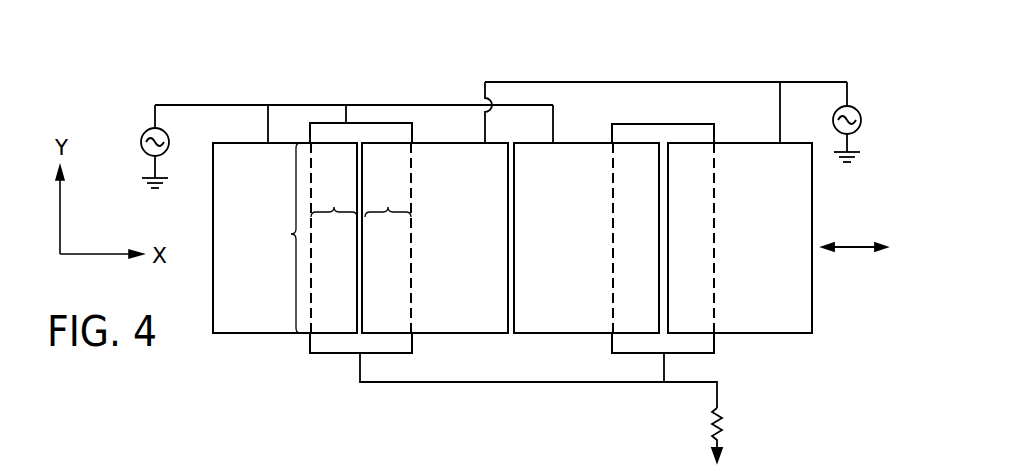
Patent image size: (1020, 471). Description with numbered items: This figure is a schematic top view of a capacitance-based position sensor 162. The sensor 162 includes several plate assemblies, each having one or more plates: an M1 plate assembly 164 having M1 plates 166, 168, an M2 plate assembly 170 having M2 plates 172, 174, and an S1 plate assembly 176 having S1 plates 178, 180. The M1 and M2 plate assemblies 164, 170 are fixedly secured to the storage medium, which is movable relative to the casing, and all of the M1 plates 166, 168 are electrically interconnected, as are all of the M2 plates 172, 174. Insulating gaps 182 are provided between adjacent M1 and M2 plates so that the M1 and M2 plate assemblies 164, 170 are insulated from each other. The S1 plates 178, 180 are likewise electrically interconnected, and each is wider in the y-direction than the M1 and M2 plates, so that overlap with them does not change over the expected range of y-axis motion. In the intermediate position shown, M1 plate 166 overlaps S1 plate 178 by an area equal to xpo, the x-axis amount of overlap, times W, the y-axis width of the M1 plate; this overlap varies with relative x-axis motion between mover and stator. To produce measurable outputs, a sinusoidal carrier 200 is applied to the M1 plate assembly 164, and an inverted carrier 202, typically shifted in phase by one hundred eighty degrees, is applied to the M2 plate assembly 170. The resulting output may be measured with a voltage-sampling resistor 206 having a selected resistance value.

The position sensor 162 is at (725, 49).
The M1 plate assembly 164 is at (212, 233).
The M1 plate 166 is at (235, 336).
The M1 plate 168 is at (575, 337).
The M2 plate assembly 170 is at (414, 238).
The M2 plate 172 is at (473, 337).
The M2 plate 174 is at (738, 337).
The S1 plate assembly 176 is at (289, 229).
The S1 plate 178 is at (333, 356).
The S1 plate 180 is at (697, 337).
The insulating gap 182 is at (363, 243).
The sinusoidal carrier 200 is at (142, 130).
The inverted carrier 202 is at (853, 106).
The voltage-sampling resistor 206 is at (712, 423).